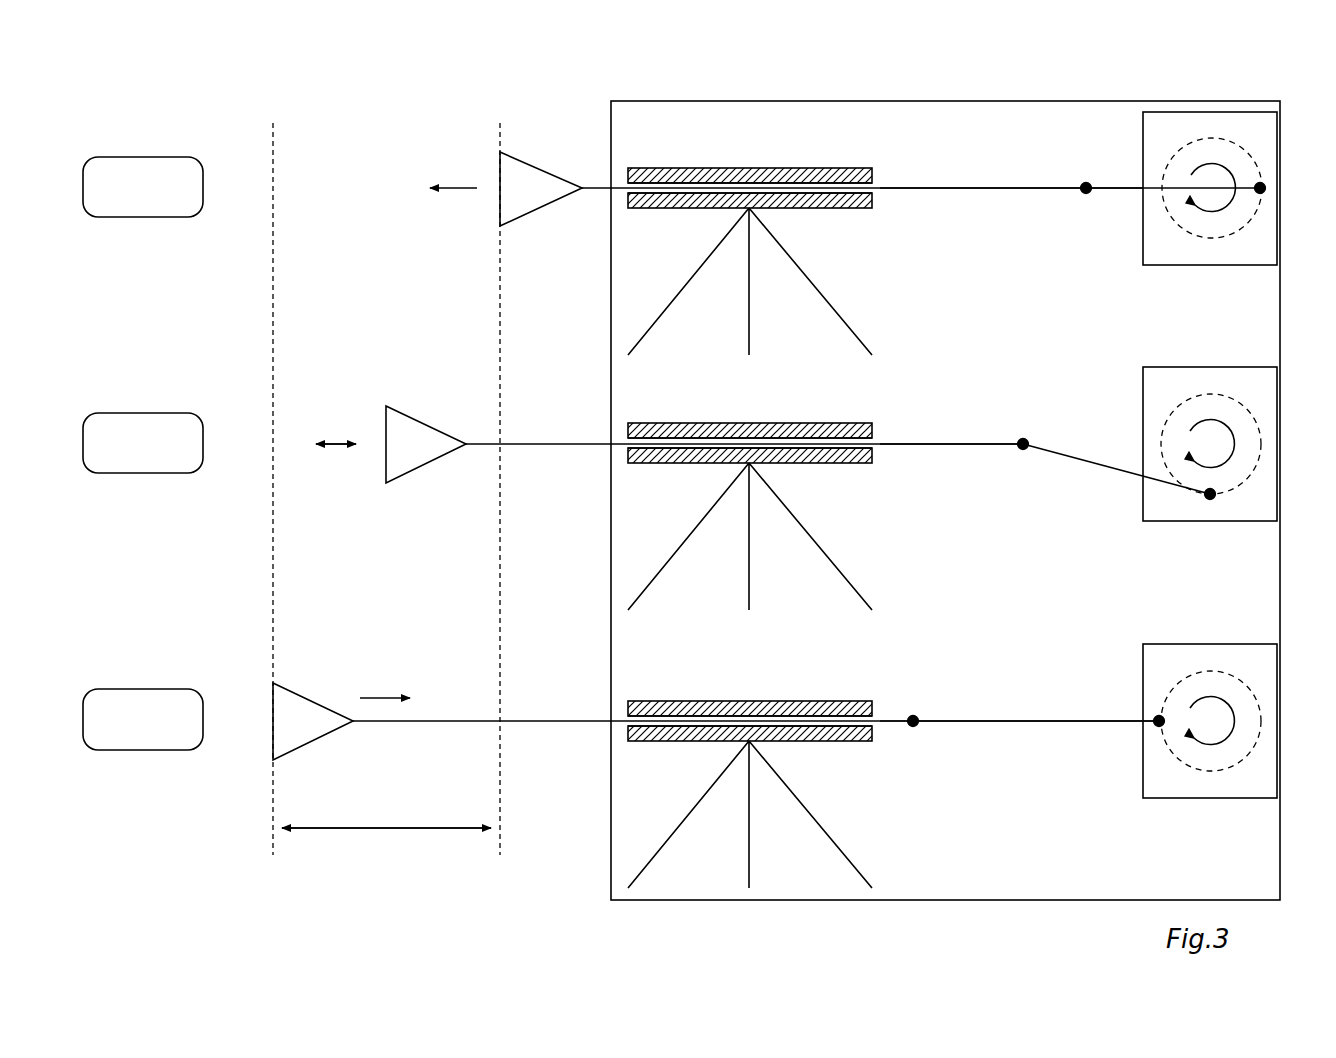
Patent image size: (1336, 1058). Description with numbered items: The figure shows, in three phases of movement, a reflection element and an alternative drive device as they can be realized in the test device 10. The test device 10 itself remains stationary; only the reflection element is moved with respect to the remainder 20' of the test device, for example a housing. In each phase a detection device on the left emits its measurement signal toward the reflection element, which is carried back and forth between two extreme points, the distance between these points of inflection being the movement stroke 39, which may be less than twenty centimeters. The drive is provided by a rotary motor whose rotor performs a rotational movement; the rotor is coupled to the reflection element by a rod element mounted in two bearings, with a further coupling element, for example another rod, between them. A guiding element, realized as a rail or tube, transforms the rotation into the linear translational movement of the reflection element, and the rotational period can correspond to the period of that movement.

The test device 10 is at (404, 81).
The remainder 20' is at (945, 477).
The movement stroke 39 is at (388, 830).